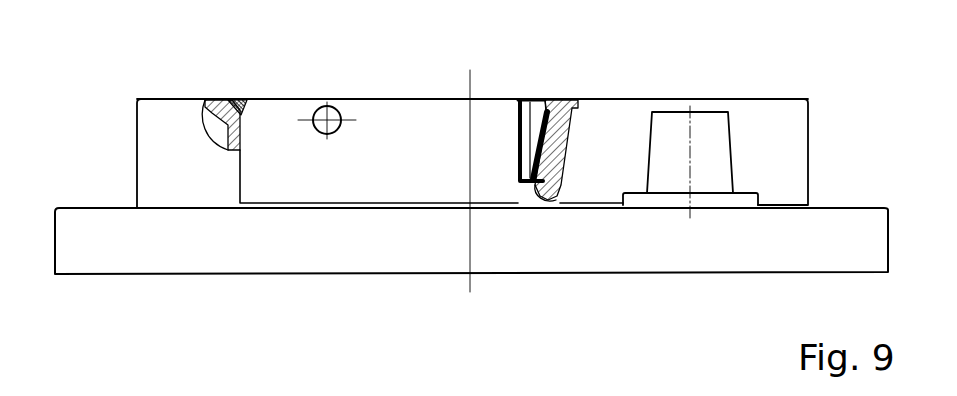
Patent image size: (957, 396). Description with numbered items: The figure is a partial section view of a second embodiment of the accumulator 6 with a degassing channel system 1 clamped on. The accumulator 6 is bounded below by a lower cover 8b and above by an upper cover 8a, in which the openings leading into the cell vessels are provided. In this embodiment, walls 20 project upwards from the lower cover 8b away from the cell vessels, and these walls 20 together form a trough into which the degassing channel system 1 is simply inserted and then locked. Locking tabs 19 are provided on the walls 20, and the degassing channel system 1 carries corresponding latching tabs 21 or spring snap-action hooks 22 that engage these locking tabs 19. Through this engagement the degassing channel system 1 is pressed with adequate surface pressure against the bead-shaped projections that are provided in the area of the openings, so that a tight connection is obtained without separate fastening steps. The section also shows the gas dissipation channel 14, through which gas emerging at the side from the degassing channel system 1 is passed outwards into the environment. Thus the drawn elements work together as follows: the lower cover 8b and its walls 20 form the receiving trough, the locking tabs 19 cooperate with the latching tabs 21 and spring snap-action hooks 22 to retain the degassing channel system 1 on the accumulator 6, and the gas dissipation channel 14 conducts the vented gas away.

The degassing channel system 1 is at (402, 92).
The accumulator 6 is at (746, 79).
The upper cover 8a is at (137, 122).
The lower cover 8b is at (415, 262).
The gas dissipation channel 14 is at (325, 108).
The locking tabs 19 is at (233, 100).
The walls 20 is at (228, 133).
The latching tabs 21 is at (246, 108).
The spring snap-action hooks 22 is at (520, 128).